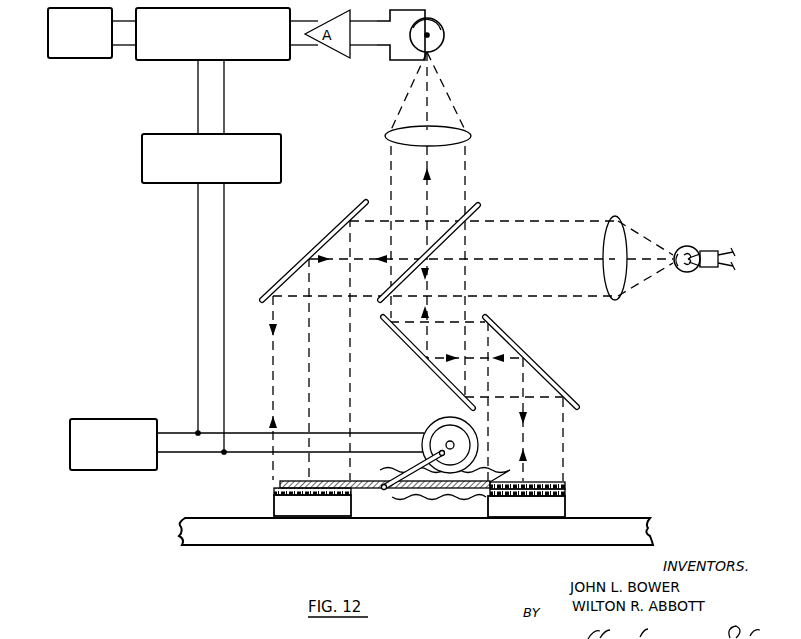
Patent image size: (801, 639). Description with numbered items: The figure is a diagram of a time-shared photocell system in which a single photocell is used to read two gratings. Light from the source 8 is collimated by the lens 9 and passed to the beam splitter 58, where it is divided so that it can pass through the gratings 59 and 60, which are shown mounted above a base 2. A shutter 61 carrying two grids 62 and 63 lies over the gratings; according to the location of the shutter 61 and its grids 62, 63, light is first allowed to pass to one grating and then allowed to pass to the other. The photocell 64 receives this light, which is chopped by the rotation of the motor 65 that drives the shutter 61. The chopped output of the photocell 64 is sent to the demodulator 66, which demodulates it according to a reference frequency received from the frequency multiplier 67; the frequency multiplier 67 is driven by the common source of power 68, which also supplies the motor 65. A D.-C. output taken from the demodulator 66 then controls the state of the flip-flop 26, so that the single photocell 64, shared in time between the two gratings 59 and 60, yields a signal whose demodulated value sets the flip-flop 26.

The base 2 is at (262, 538).
The source 8 is at (692, 250).
The lens 9 is at (617, 240).
The flip-flop 26 is at (105, 50).
The beam splitter 58 is at (476, 208).
The grating 59 is at (285, 503).
The grating 60 is at (560, 504).
The shutter 61 is at (385, 481).
The grid 62 is at (562, 488).
The grid 63 is at (276, 490).
The photocell 64 is at (444, 32).
The motor 65 is at (444, 423).
The demodulator 66 is at (264, 52).
The frequency multiplier 67 is at (158, 178).
The source of power 68 is at (103, 468).